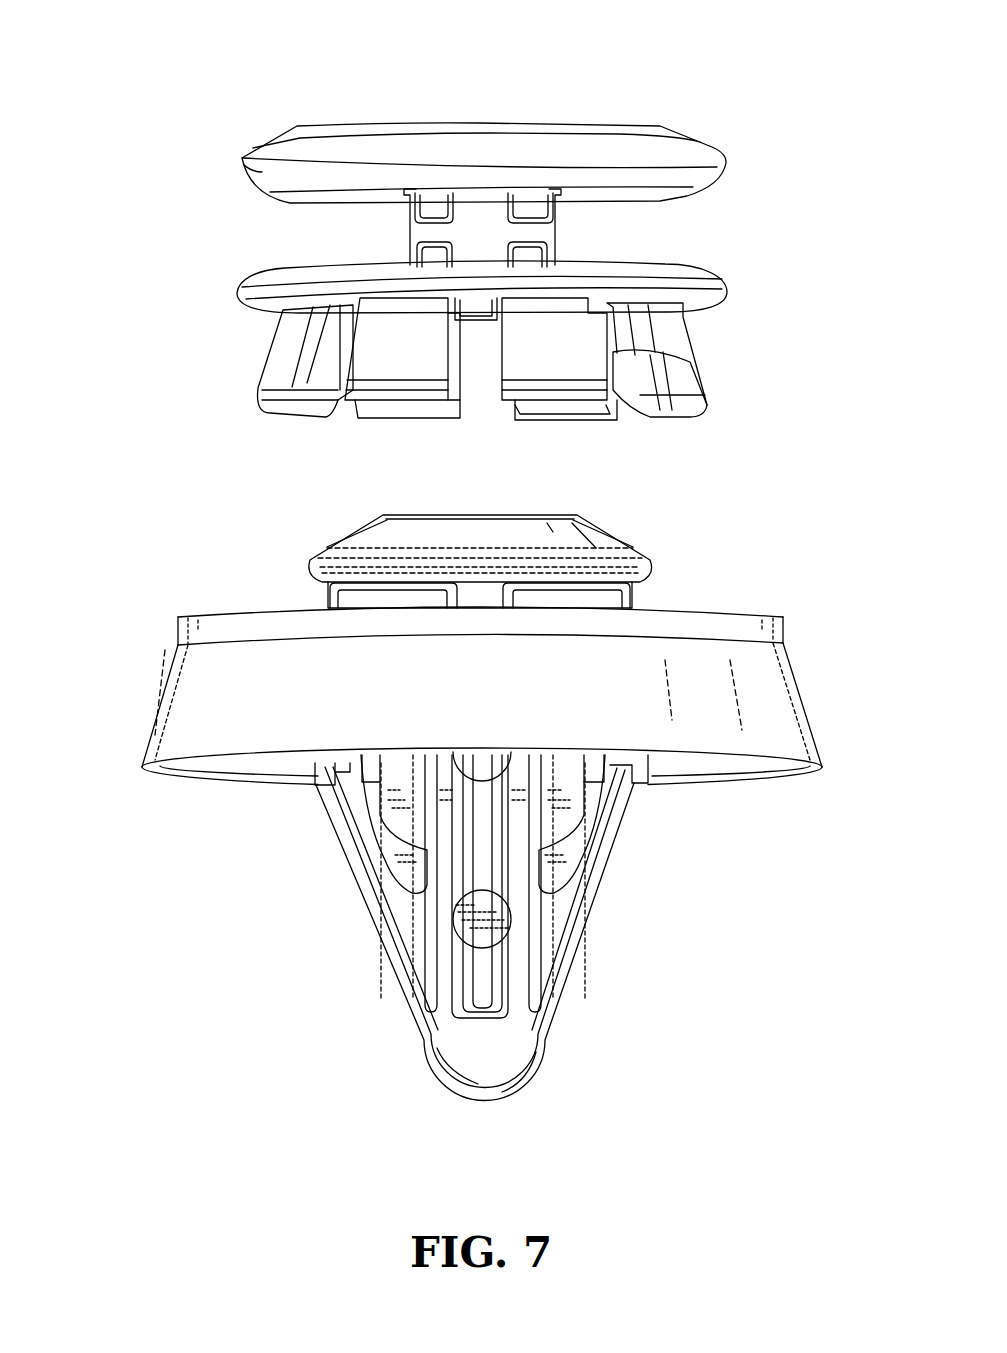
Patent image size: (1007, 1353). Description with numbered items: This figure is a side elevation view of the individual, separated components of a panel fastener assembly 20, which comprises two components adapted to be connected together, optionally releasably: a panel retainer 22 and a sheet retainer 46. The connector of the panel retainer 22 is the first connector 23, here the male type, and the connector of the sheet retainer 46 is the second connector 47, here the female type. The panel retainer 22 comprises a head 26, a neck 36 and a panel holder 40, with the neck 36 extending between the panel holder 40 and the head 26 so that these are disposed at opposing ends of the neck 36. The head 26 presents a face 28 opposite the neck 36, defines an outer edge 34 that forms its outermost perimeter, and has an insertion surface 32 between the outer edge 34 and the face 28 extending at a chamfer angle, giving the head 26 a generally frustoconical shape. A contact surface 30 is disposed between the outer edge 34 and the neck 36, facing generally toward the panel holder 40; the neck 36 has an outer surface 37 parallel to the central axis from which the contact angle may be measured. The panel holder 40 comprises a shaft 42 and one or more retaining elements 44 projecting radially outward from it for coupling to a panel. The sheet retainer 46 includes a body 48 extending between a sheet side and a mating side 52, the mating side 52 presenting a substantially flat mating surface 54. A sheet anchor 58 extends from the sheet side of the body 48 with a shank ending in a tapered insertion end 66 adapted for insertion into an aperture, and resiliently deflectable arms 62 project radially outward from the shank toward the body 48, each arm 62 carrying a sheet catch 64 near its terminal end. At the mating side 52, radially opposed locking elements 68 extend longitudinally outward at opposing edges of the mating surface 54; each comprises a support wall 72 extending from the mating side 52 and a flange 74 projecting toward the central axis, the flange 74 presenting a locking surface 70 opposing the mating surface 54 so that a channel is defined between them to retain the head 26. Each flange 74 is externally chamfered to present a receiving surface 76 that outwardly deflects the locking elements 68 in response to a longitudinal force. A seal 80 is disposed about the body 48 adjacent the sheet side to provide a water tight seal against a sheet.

The panel fastener assembly 20 is at (146, 72).
The panel retainer 22 is at (752, 122).
The first connector 23 is at (770, 342).
The head 26 is at (334, 541).
The face 28 is at (548, 513).
The contact surface 30 is at (313, 583).
The insertion surface 32 is at (375, 530).
The outer edge 34 is at (652, 560).
The neck 36 is at (636, 596).
The outer surface 37 is at (470, 597).
The panel holder 40 is at (432, 130).
The shaft 42 is at (548, 232).
The retaining element 44 is at (258, 160).
The sheet retainer 46 is at (690, 940).
The second connector 47 is at (706, 551).
The body 48 is at (240, 298).
The mating side 52 is at (695, 318).
The mating surface 54 is at (483, 315).
The sheet anchor 58 is at (445, 1040).
The arms 62 is at (365, 836).
The sheet catch 64 is at (625, 786).
The insertion end 66 is at (482, 1101).
The locking elements 68 is at (585, 400).
The locking surface 70 is at (630, 378).
The support wall 72 is at (285, 358).
The flange 74 is at (650, 395).
The receiving surface 76 is at (566, 373).
The seal 80 is at (760, 690).